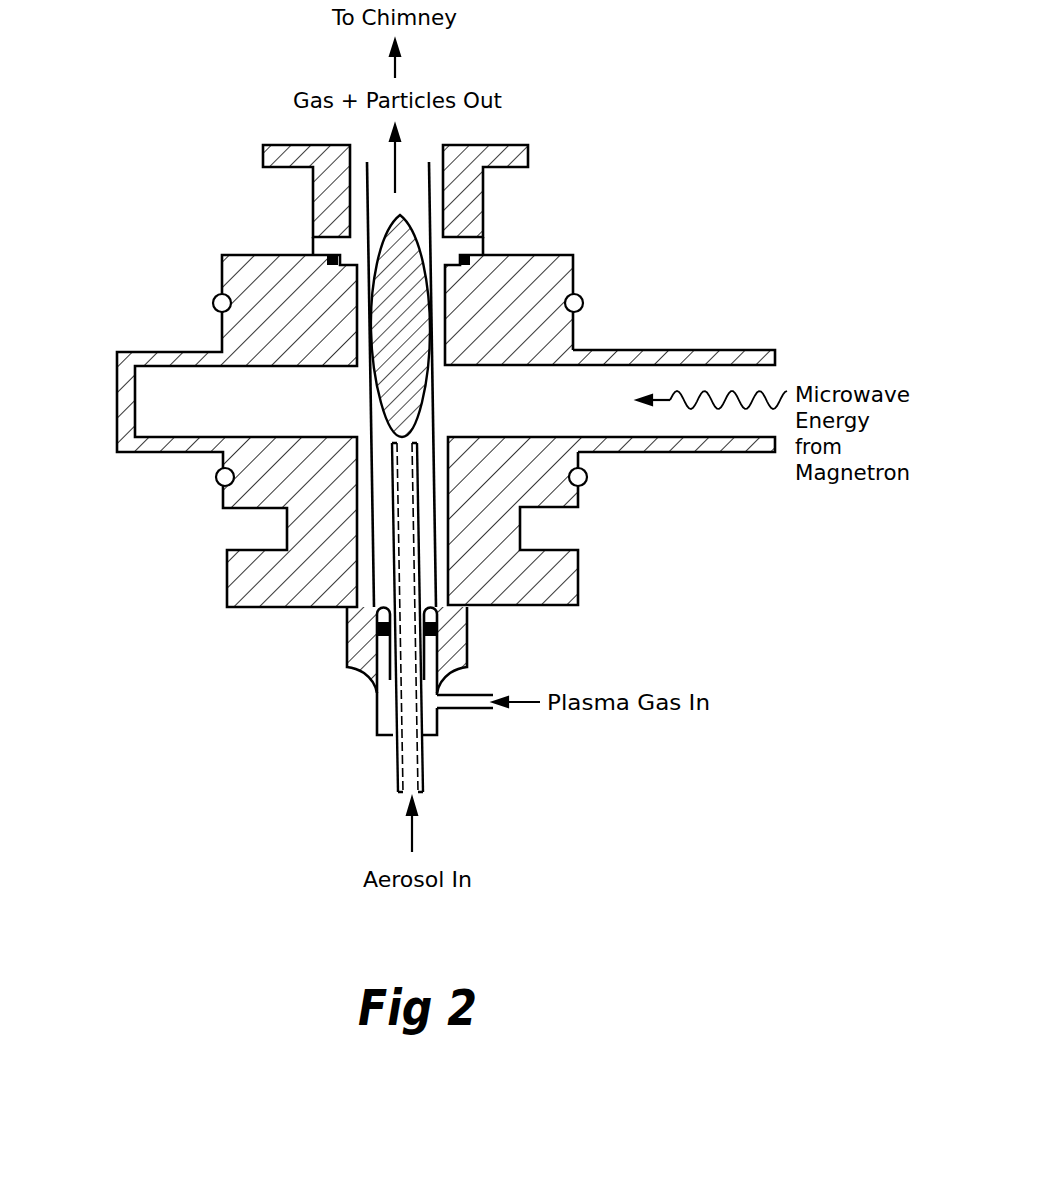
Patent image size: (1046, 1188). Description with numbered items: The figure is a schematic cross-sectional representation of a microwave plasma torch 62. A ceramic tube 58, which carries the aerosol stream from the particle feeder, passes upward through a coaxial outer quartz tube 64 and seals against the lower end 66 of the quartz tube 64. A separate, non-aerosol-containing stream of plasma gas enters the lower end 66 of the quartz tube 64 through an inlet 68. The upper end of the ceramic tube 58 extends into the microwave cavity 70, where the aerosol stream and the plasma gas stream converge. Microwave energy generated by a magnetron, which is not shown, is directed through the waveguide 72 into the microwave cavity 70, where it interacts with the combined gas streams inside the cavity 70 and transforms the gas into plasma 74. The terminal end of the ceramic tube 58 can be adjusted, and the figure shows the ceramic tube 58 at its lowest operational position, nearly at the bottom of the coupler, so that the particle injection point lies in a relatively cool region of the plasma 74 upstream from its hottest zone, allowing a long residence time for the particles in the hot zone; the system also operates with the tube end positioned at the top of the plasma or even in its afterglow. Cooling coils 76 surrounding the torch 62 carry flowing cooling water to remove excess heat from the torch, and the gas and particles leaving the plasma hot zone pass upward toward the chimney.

The plasma torch 62 is at (187, 120).
The microwave cavity 70 is at (522, 403).
The waveguide 72 is at (606, 336).
The cooling coils 76 is at (790, 530).
The plasma 74 is at (403, 328).
The quartz tube 64 is at (437, 472).
The ceramic tube 58 is at (457, 772).
The lower end of quartz tube 66 is at (392, 737).
The inlet 68 is at (483, 694).